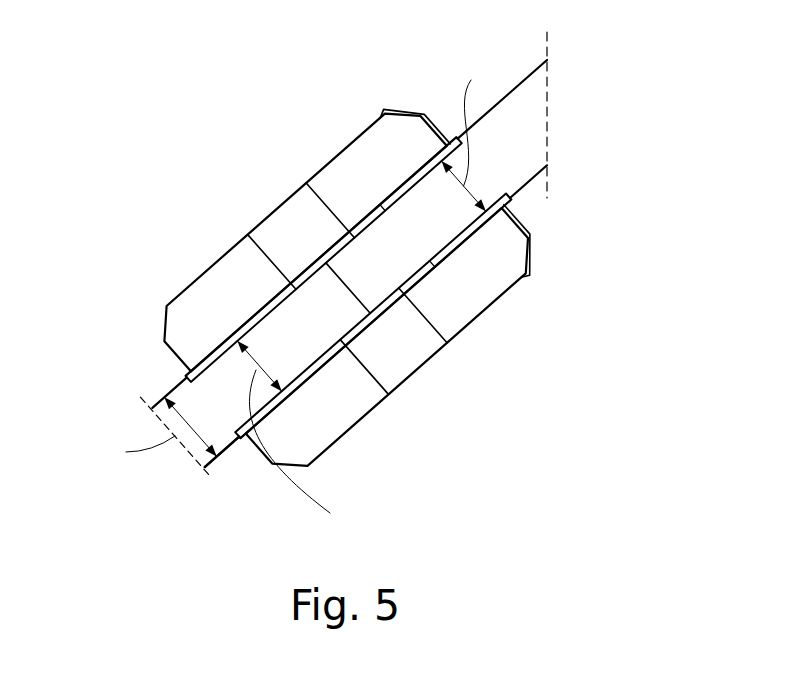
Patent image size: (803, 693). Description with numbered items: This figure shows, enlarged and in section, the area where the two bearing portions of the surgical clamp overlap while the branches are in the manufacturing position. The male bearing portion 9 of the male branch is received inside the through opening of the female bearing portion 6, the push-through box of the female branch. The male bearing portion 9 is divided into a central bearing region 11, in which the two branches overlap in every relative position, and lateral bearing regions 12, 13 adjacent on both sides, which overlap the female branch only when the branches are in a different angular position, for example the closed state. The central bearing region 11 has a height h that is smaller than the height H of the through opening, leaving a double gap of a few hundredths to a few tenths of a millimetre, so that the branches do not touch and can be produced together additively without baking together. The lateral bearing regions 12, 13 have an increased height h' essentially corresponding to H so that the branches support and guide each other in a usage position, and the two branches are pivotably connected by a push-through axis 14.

The female bearing portion 6 is at (362, 111).
The male bearing portion 9 is at (186, 450).
The central bearing region 11 is at (303, 334).
The lateral bearing region 12 is at (223, 452).
The lateral bearing region 13 is at (533, 148).
The push-through axis 14 is at (289, 224).